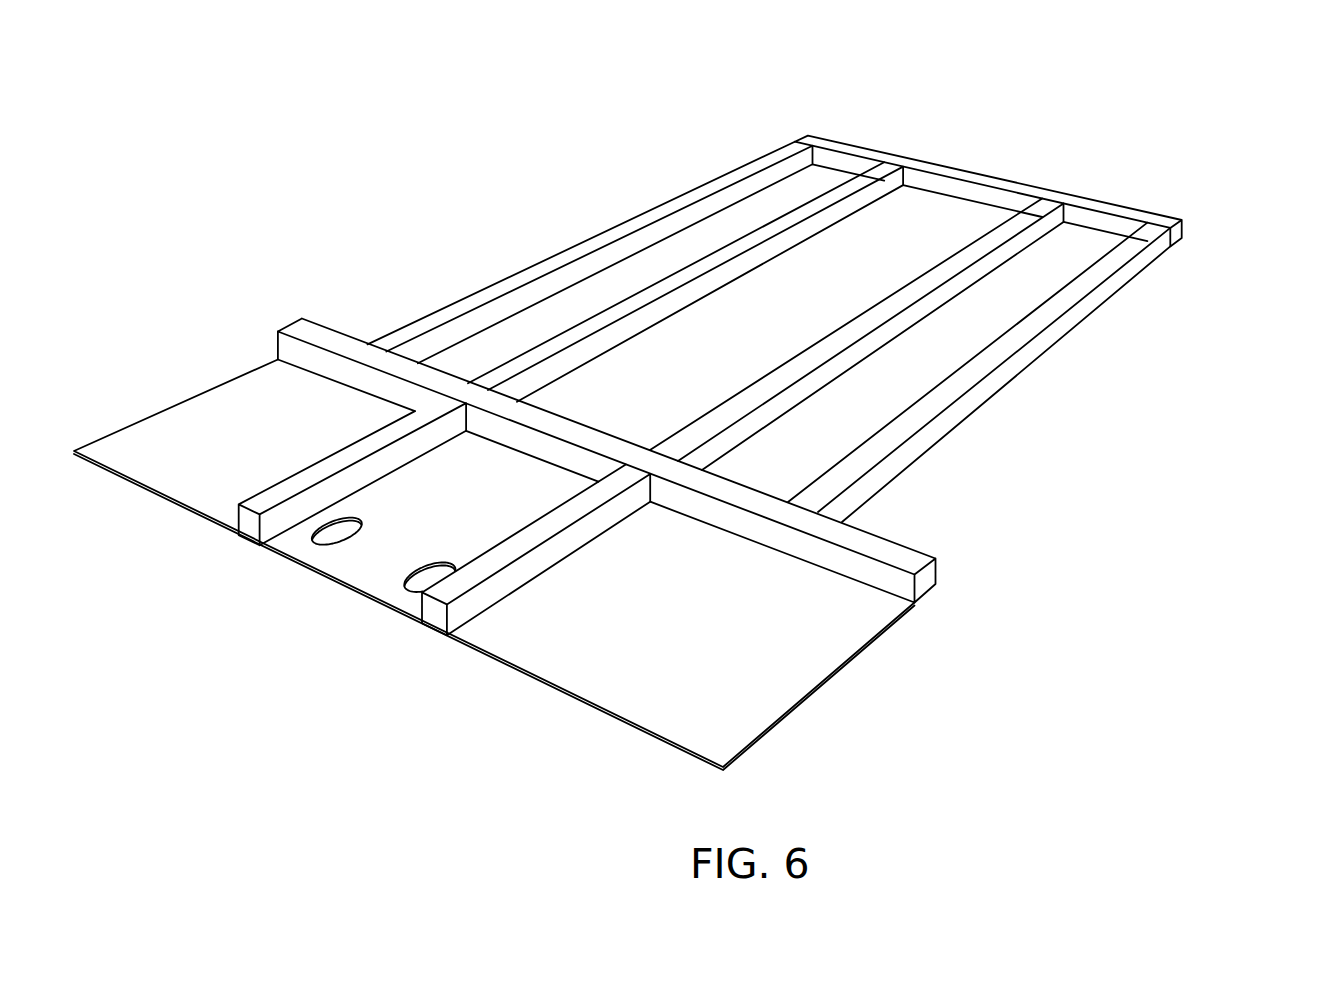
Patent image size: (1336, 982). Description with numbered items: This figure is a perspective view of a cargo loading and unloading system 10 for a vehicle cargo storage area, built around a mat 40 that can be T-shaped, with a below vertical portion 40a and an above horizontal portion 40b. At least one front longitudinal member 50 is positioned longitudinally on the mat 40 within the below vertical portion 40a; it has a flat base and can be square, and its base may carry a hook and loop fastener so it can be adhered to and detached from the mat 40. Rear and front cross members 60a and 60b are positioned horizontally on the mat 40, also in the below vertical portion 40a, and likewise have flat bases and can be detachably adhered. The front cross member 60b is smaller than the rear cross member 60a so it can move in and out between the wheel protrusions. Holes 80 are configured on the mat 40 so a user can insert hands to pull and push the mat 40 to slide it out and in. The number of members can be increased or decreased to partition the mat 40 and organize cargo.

The cargo loading and unloading system 10 is at (1217, 117).
The mat 40 is at (1058, 317).
The below vertical portion 40a is at (548, 298).
The above horizontal portion 40b is at (765, 686).
The front longitudinal member 50 is at (967, 427).
The rear cross member 60a is at (873, 542).
The front cross member 60b is at (1127, 212).
The holes 80 is at (310, 533).